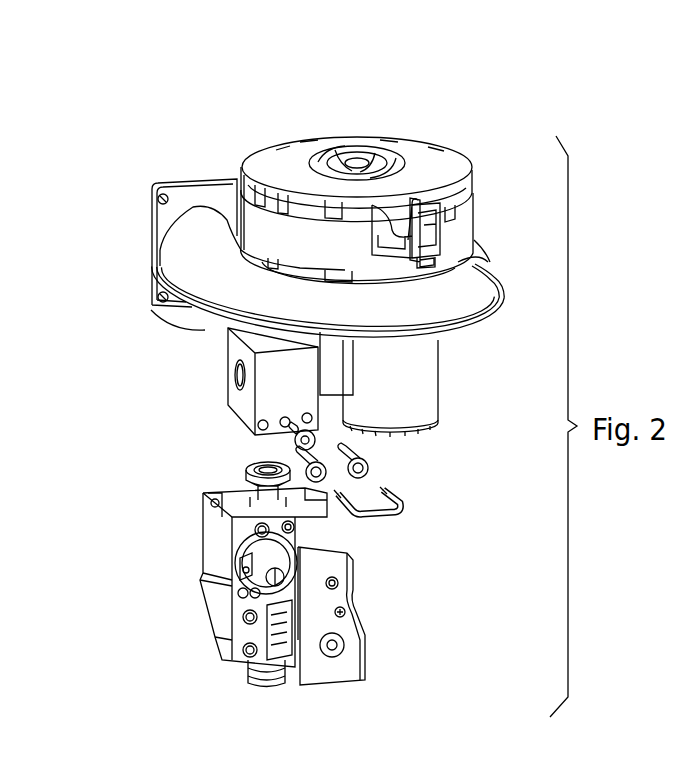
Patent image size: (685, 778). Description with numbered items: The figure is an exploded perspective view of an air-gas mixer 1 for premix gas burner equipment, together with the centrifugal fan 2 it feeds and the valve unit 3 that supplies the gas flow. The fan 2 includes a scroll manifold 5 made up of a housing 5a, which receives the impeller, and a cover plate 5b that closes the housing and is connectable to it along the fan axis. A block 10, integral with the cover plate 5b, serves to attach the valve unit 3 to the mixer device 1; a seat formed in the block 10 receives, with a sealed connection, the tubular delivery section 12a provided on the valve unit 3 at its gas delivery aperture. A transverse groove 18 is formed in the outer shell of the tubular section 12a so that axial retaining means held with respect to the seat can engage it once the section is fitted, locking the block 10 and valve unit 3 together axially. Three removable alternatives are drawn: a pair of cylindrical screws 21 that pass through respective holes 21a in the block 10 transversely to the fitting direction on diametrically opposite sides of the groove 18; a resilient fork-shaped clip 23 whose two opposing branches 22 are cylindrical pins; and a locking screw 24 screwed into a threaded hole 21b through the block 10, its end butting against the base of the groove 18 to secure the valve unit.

The air-gas mixer 1 is at (461, 405).
The centrifugal fan 2 is at (496, 164).
The valve unit 3 is at (178, 617).
The scroll manifold 5 is at (478, 334).
The housing 5a is at (478, 262).
The cover plate 5b is at (203, 316).
The block 10 is at (222, 420).
The tubular delivery section 12a is at (232, 470).
The transverse groove 18 is at (213, 510).
The cylindrical screws 21 is at (290, 457).
The holes 21a is at (305, 412).
The threaded hole 21b is at (283, 417).
The opposing branches 22 is at (392, 494).
The resilient fork-shaped clip 23 is at (392, 532).
The locking screw 24 is at (316, 441).